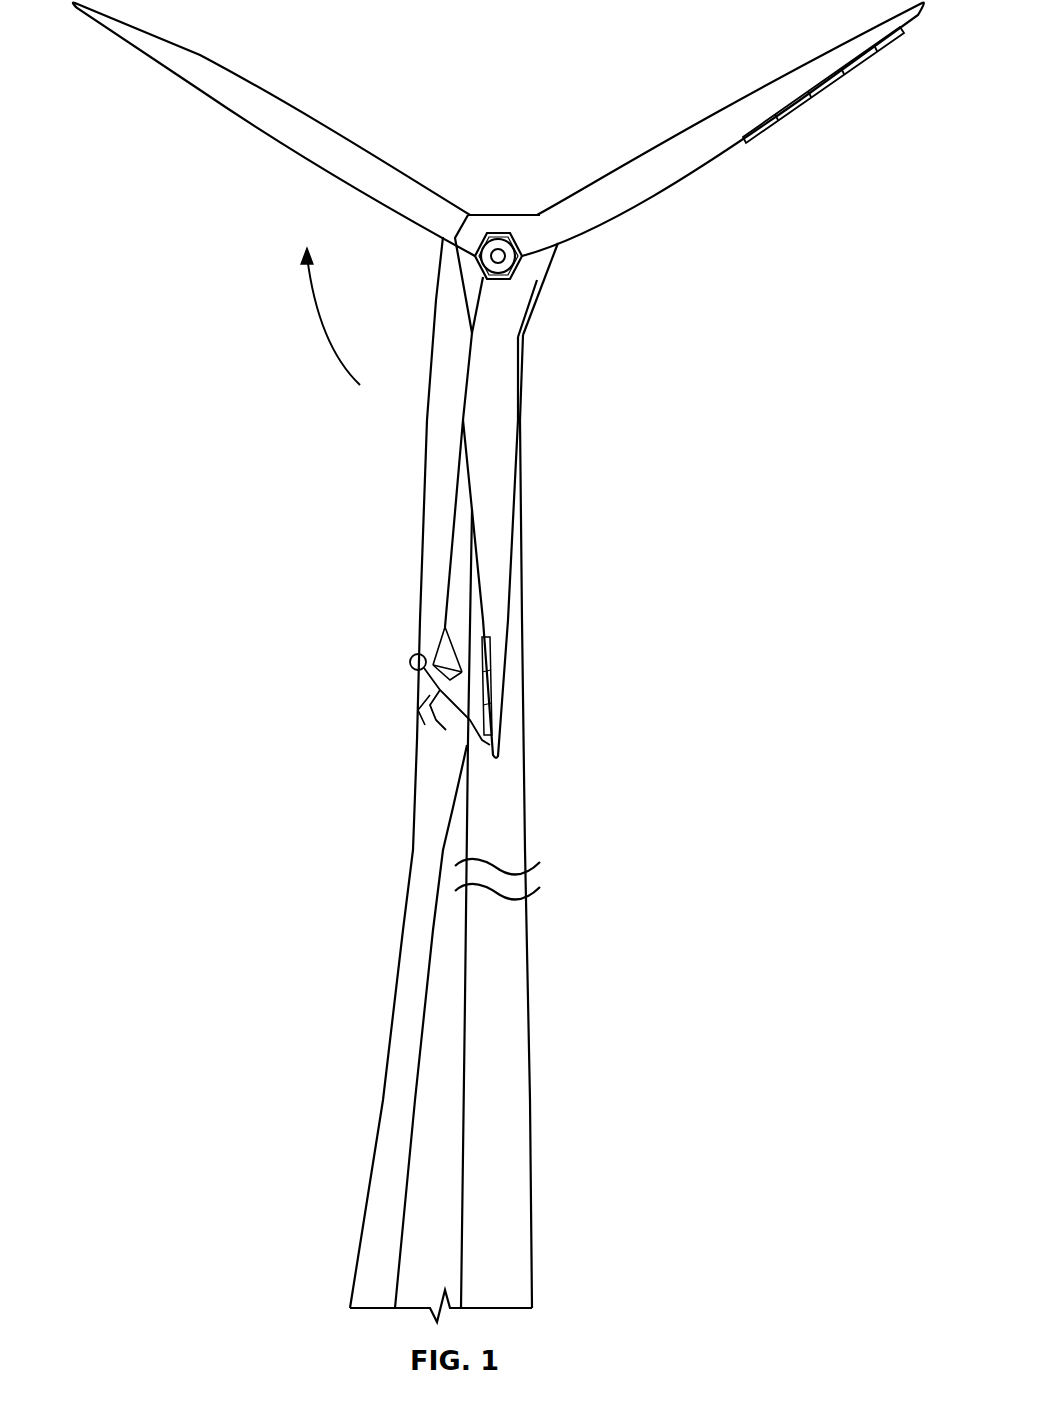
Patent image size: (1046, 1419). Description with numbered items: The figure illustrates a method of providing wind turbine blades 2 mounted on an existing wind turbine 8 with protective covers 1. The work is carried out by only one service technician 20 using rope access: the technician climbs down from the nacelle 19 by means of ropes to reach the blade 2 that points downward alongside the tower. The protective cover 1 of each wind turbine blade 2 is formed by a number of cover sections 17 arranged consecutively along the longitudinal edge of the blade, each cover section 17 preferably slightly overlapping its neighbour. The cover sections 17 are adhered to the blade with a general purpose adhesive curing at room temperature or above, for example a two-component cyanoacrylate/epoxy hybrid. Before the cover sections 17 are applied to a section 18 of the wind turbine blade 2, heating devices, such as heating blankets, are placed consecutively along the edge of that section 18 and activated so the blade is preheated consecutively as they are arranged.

The protective cover 1 is at (885, 82).
The wind turbine blade 2 is at (612, 182).
The wind turbine 8 is at (622, 663).
The cover section 17 is at (750, 140).
The section of a wind turbine blade 18 is at (838, 112).
The nacelle 19 is at (500, 215).
The service technician 20 is at (410, 688).